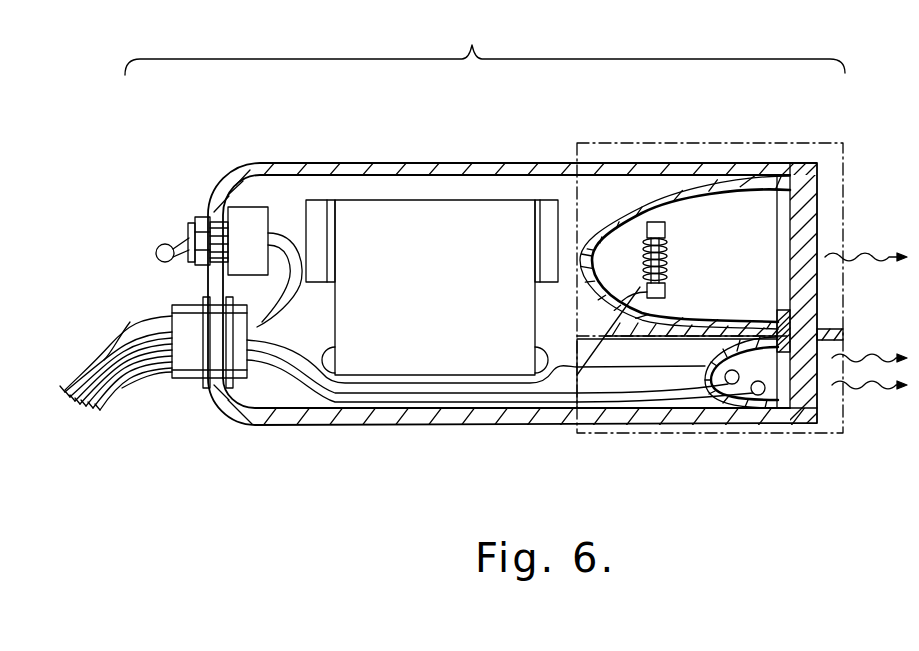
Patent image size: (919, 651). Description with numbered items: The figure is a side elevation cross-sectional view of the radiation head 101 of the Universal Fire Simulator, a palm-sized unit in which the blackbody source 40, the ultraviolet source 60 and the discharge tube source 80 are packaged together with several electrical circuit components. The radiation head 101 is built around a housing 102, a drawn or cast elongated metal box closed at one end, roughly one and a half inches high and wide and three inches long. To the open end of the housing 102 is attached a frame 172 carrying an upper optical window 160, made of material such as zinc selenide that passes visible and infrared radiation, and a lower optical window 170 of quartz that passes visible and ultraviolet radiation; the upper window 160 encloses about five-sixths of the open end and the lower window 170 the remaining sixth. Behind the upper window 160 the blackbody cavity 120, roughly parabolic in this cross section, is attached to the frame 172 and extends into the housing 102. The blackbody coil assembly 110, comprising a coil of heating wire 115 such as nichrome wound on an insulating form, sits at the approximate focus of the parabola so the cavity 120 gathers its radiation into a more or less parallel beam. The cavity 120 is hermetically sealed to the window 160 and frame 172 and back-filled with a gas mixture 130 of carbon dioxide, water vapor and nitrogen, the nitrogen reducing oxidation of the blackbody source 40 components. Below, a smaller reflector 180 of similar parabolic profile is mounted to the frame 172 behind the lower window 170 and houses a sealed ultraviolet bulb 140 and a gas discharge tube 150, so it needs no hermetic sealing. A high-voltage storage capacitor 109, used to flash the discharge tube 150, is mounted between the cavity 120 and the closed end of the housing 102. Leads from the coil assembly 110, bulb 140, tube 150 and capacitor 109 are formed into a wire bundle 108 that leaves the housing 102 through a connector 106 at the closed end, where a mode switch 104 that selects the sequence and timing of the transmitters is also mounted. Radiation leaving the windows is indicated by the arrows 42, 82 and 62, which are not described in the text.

The radiation head 101 is at (485, 46).
The housing 102 is at (244, 172).
The mode switch 104 is at (195, 222).
The connector 106 is at (195, 370).
The wire bundle 108 is at (265, 373).
The high-voltage storage capacitor 109 is at (424, 200).
The blackbody source 40 is at (578, 143).
The blackbody cavity 120 is at (628, 203).
The blackbody coil assembly 110 is at (665, 222).
The coil of heating wire 115 is at (668, 252).
The gas mixture 130 is at (722, 212).
The upper optical window 160 is at (818, 176).
The light beam 42 is at (862, 257).
The light beam 82 is at (862, 358).
The light beam 62 is at (862, 385).
The lower optical window 170 is at (822, 403).
The frame 172 is at (817, 425).
The ultraviolet bulb 140 is at (761, 395).
The gas discharge tube 150 is at (731, 384).
The reflector 180 is at (705, 368).
The ultraviolet source 60 is at (577, 433).
The discharge tube source 80 is at (683, 402).